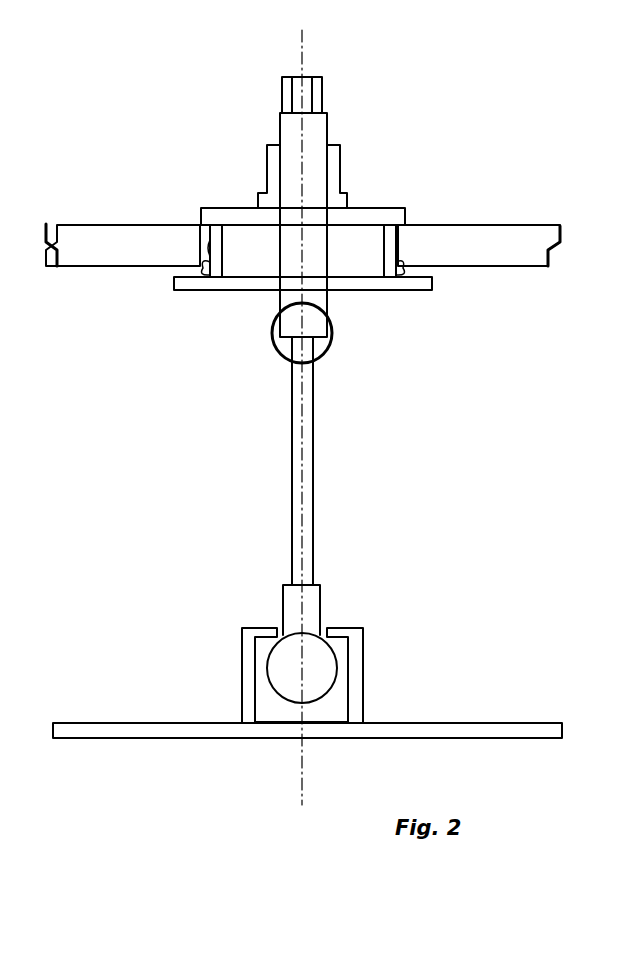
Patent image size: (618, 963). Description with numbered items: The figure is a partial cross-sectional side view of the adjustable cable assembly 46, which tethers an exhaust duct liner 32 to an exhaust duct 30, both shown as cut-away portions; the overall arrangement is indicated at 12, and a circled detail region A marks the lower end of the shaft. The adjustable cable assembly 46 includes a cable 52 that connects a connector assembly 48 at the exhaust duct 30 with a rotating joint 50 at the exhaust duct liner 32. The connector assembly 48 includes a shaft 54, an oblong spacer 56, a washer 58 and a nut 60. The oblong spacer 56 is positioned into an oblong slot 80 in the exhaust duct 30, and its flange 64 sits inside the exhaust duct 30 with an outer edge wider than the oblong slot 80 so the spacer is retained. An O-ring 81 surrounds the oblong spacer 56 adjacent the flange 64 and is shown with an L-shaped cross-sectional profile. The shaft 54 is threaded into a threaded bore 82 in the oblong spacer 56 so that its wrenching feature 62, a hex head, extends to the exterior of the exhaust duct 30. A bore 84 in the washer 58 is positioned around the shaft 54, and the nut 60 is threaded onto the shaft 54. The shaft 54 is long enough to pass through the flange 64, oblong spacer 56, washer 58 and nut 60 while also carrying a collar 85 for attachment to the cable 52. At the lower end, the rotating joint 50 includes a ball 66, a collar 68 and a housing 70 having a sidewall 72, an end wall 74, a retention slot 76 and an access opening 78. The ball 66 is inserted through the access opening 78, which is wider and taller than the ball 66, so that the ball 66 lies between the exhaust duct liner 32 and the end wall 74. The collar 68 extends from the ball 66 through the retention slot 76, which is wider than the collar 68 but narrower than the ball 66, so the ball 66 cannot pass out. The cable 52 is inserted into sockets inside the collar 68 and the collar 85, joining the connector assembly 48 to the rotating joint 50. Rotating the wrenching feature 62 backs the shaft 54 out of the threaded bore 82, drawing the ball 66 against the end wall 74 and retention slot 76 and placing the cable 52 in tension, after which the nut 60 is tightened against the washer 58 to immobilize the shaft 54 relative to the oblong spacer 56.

The mounting assembly 12 is at (183, 473).
The exhaust duct 30 is at (517, 253).
The exhaust duct liner 32 is at (478, 722).
The adjustable cable assembly 46 is at (452, 131).
The connector assembly 48 is at (218, 303).
The rotating joint 50 is at (388, 615).
The cable 52 is at (315, 480).
The shaft 54 is at (307, 158).
The oblong spacer 56 is at (362, 242).
The washer 58 is at (398, 218).
The nut 60 is at (267, 170).
The wrenching feature 62 is at (317, 90).
The flange 64 is at (418, 292).
The ball 66 is at (289, 683).
The collar 68 is at (283, 600).
The housing 70 is at (370, 660).
The sidewall 72 is at (240, 697).
The end wall 74 is at (265, 628).
The retention slot 76 is at (325, 627).
The access opening 78 is at (347, 698).
The oblong slot 80 is at (215, 240).
The O-ring 81 is at (388, 270).
The threaded bore 82 is at (327, 245).
The bore 84 is at (337, 214).
The collar 85 is at (313, 327).
The detail region A is at (276, 350).